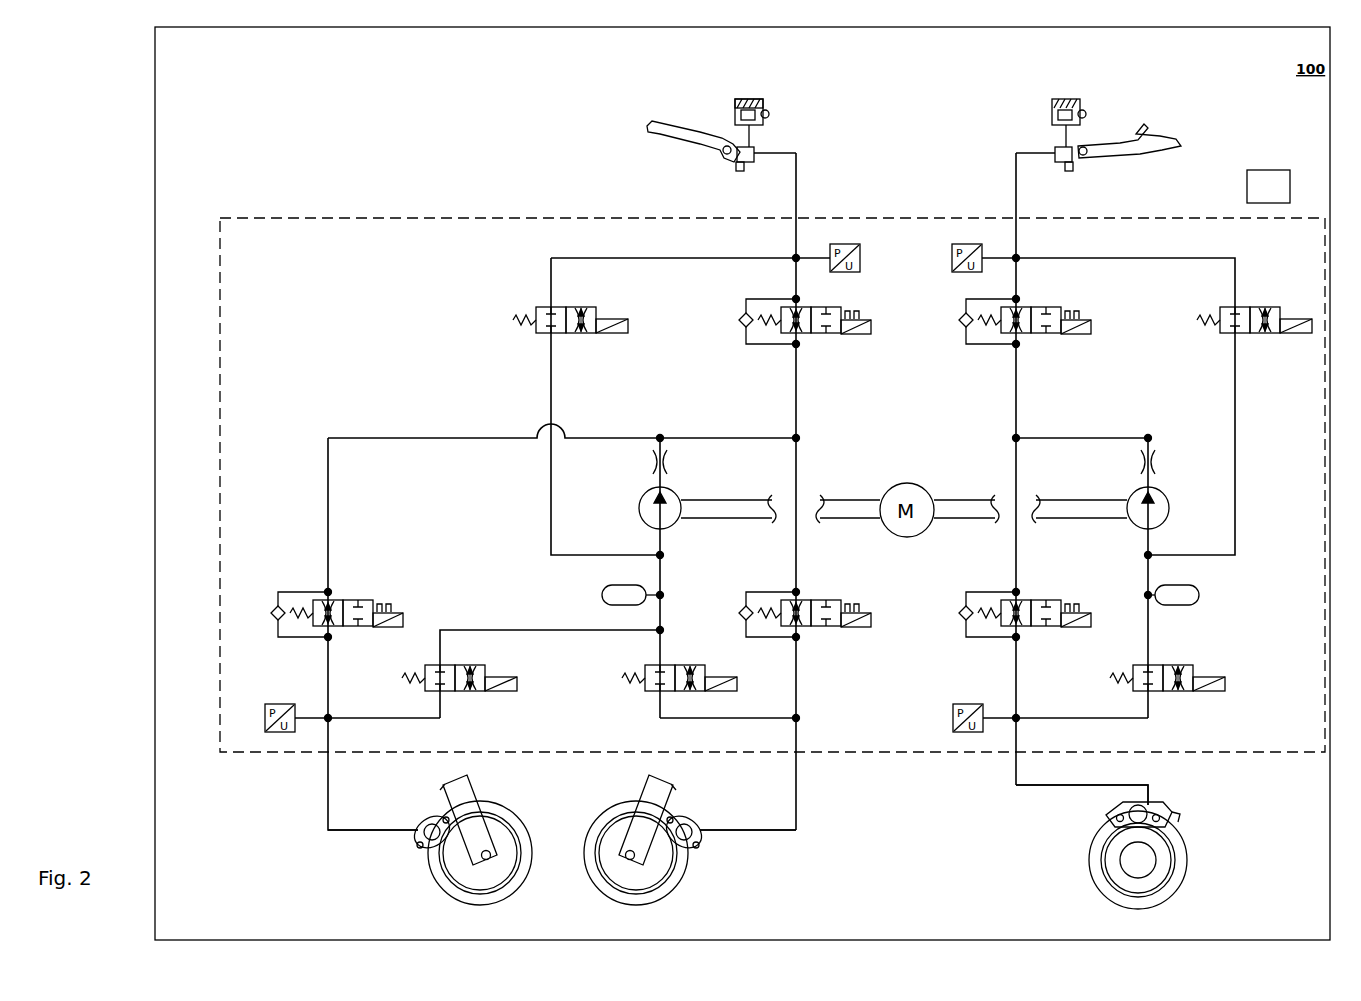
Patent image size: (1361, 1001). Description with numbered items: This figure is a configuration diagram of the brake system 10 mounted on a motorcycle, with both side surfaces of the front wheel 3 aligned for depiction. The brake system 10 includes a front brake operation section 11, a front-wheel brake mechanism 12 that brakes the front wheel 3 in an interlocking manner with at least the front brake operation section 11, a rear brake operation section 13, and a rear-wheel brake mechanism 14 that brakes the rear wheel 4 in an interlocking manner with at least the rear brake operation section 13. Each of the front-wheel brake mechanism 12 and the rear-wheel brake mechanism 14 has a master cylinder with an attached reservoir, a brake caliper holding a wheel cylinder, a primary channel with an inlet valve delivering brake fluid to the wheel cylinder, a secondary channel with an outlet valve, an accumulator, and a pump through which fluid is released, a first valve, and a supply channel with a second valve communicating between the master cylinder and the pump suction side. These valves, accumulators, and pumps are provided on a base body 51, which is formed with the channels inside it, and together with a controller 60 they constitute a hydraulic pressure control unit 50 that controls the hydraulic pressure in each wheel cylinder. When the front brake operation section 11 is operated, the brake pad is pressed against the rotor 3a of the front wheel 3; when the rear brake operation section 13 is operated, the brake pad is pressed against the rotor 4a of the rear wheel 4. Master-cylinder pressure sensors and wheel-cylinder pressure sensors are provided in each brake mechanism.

The brake system 10 is at (322, 128).
The front wheel 3 is at (558, 847).
The rotor 3a is at (602, 888).
The rear wheel 4 is at (1126, 863).
The rotor 4a is at (1178, 876).
The front brake operation section 11 is at (668, 130).
The front-wheel brake mechanism 12 is at (820, 132).
The rear brake operation section 13 is at (1158, 138).
The rear-wheel brake mechanism 14 is at (995, 132).
The hydraulic pressure control unit 50 is at (1232, 158).
The base body 51 is at (308, 217).
The controller 60 is at (1280, 165).